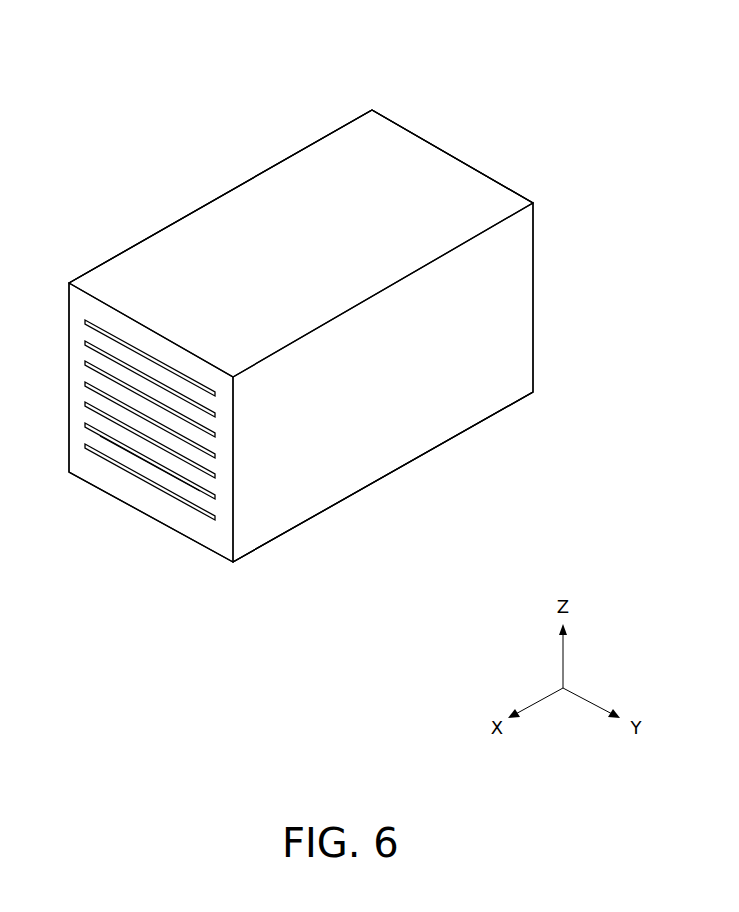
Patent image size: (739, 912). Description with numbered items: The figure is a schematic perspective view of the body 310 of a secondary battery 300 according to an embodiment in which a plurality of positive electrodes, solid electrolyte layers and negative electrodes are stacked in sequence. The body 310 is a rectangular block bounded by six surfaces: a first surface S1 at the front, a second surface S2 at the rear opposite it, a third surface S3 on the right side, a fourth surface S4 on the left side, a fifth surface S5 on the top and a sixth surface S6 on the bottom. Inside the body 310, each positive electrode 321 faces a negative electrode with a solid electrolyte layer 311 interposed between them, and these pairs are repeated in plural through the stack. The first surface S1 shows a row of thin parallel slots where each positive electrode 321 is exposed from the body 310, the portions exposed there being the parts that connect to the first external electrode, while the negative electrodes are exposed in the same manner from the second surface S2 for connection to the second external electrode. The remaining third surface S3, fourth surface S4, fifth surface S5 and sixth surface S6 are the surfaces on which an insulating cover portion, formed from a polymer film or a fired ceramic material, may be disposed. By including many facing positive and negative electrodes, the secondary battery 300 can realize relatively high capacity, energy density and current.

The secondary battery 300 is at (327, 335).
The body 310 is at (233, 220).
The solid electrolyte layer 311 is at (163, 460).
The positive electrode 321 is at (178, 478).
The first surface S1 is at (130, 472).
The second surface S2 is at (453, 197).
The third surface S3 is at (497, 324).
The fourth surface S4 is at (172, 260).
The fifth surface S5 is at (305, 187).
The sixth surface S6 is at (350, 457).